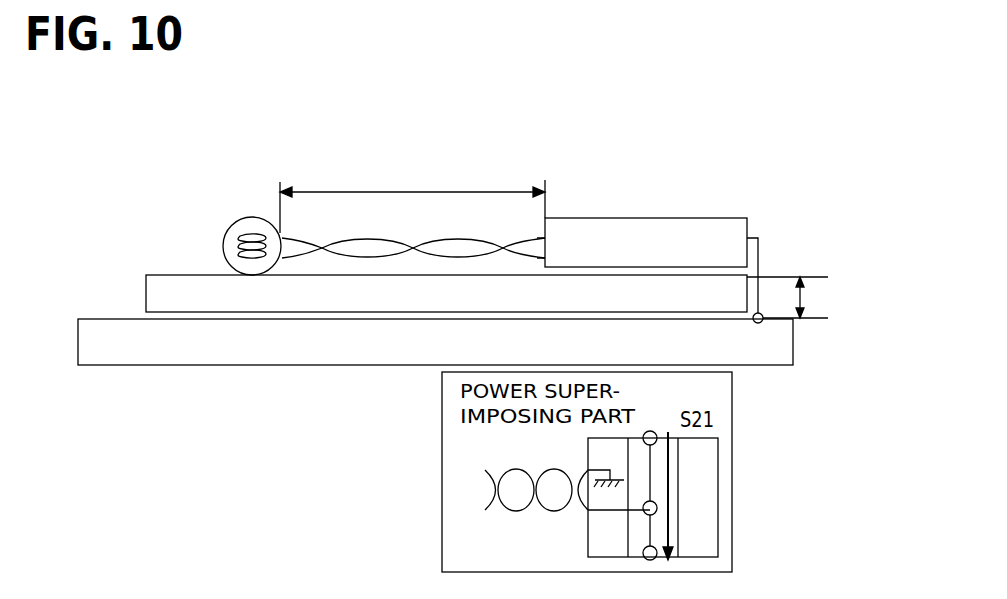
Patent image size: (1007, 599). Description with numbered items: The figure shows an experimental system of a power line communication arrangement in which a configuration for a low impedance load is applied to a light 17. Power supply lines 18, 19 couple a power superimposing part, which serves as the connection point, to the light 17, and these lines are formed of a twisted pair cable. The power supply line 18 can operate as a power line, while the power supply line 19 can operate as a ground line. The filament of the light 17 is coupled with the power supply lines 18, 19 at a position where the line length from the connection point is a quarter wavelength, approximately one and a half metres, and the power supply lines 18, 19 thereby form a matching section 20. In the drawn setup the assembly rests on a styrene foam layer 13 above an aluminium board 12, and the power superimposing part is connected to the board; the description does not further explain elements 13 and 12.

The matching section 20 is at (490, 128).
The light 17 is at (226, 233).
The power supply line 18 is at (482, 238).
The power supply line 19 is at (537, 240).
The styrene foam 13 is at (160, 291).
The aluminium board 12 is at (232, 348).